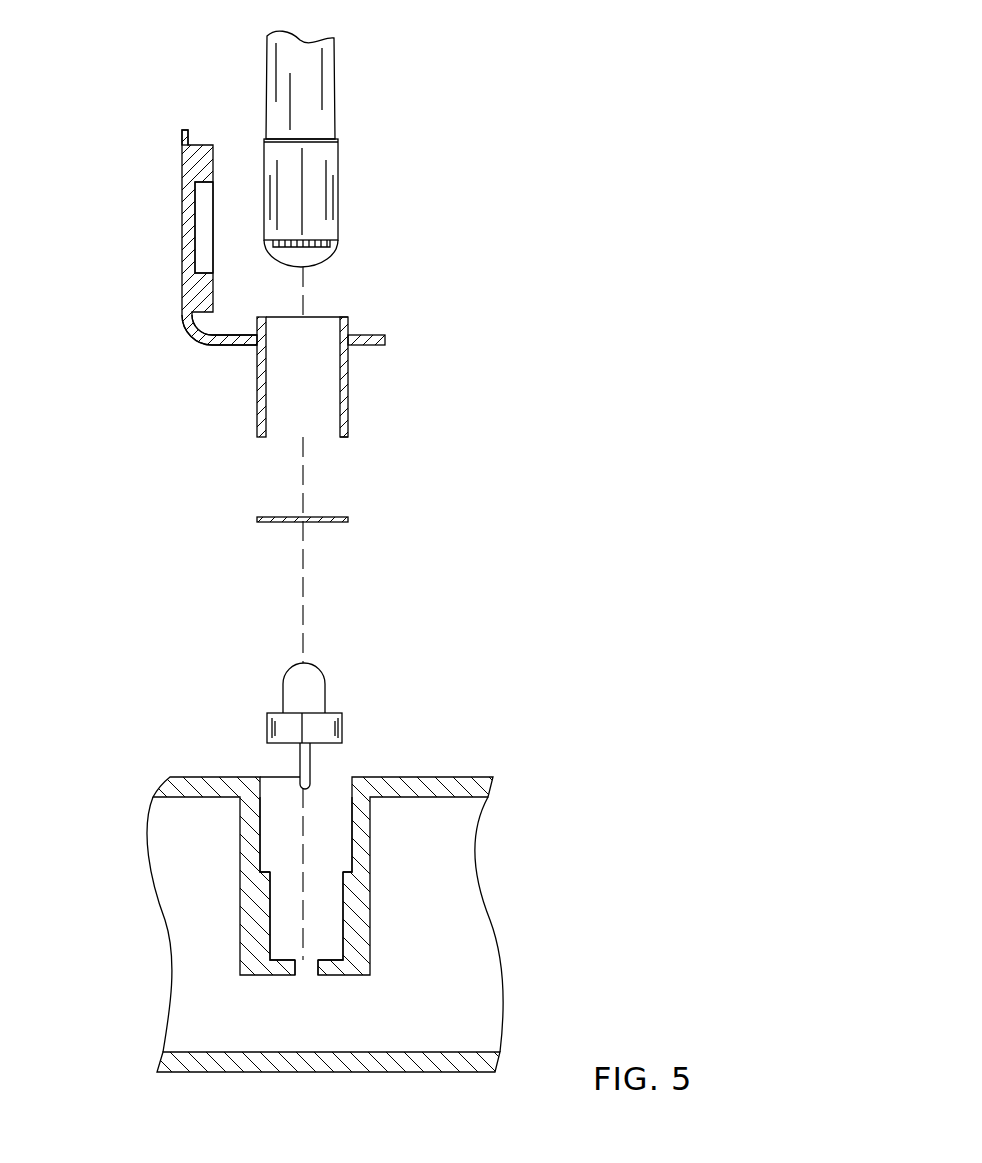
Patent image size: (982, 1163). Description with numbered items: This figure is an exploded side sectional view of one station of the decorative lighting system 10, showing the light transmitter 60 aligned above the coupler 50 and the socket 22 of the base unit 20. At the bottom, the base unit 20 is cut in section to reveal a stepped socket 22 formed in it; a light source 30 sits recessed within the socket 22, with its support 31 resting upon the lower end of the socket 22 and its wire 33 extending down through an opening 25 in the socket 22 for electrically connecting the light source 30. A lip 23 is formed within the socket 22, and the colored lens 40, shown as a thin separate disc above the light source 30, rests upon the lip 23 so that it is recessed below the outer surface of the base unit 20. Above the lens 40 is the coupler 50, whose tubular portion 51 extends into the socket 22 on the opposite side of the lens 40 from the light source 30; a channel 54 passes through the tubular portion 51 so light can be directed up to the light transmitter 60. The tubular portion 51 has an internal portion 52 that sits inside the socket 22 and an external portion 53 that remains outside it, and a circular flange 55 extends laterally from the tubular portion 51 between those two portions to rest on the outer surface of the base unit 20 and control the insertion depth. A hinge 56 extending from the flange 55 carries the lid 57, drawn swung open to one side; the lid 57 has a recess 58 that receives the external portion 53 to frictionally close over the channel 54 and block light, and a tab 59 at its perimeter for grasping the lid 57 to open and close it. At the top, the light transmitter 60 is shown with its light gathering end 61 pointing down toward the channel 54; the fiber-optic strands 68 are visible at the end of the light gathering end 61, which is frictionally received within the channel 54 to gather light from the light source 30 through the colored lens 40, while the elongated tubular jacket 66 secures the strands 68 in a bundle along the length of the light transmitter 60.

The decorative lighting system 10 is at (580, 120).
The light transmitter 60 is at (358, 85).
The elongated tubular jacket 66 is at (327, 117).
The light gathering end 61 is at (375, 203).
The fiber-optic strands 68 is at (330, 250).
The tab 59 is at (185, 130).
The recess 58 is at (208, 220).
The lid 57 is at (166, 221).
The hinge 56 is at (192, 330).
The coupler 50 is at (403, 388).
The tubular portion 51 is at (360, 405).
The internal portion 52 is at (347, 423).
The external portion 53 is at (345, 322).
The channel 54 is at (323, 333).
The circular flange 55 is at (380, 340).
The colored lens 40 is at (350, 517).
The light source 30 is at (327, 693).
The support 31 is at (343, 716).
The wire 33 is at (305, 760).
The base unit 20 is at (372, 914).
The lip 23 is at (345, 870).
The socket 22 is at (342, 915).
The opening 25 is at (305, 975).